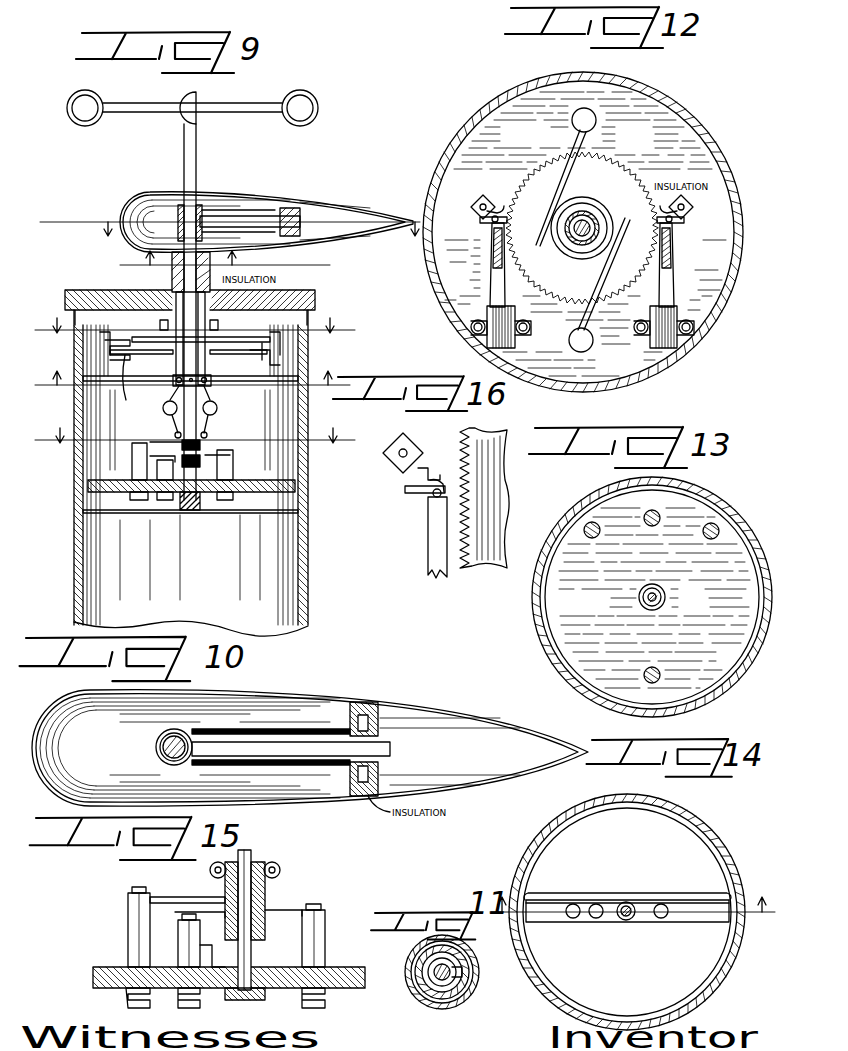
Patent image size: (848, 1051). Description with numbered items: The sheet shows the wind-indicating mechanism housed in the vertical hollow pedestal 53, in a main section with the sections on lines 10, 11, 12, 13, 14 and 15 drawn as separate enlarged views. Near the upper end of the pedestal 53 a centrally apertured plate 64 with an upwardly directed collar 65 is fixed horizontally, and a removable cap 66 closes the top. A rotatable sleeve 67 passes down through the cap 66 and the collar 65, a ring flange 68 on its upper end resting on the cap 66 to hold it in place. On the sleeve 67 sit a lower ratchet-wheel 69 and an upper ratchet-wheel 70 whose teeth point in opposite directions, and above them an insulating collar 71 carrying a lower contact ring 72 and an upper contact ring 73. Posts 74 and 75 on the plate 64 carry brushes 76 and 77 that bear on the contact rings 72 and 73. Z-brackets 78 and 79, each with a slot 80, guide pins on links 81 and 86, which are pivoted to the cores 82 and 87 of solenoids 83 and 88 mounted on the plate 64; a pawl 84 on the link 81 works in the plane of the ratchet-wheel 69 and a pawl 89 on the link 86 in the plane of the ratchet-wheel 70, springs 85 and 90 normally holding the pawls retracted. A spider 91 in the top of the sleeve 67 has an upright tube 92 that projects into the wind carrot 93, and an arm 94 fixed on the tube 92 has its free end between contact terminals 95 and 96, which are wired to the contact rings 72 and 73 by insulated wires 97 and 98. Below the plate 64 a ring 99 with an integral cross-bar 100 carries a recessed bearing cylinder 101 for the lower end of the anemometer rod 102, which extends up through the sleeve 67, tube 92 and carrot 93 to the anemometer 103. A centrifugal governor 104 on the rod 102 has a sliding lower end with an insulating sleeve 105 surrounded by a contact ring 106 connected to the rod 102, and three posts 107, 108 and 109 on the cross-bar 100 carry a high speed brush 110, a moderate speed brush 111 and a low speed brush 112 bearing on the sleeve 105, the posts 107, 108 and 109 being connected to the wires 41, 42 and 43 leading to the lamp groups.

In FIG. 9, the section line 10— 10 is at (236, 214).
In FIG. 9, the section line 11— 11 is at (223, 264).
In FIG. 9, the section line 12— 12 is at (203, 319).
In FIG. 9, the section line 13— 13 is at (188, 392).
In FIG. 9, the section line 14— 14 is at (199, 430).
In FIG. 14, the section line 15— 15 is at (629, 920).
In FIG. 15, the wire 41 is at (124, 992).
In FIG. 15, the wire 42 is at (328, 992).
In FIG. 15, the wire 43 is at (205, 992).
In FIG. 9, the pedestal 53 is at (308, 625).
In FIG. 12, the pedestal 53 is at (700, 130).
In FIG. 13, the pedestal 53 is at (742, 512).
In FIG. 14, the pedestal 53 is at (728, 848).
In FIG. 9, the plate 64 is at (90, 378).
In FIG. 12, the plate 64 is at (585, 234).
In FIG. 13, the plate 64 is at (653, 598).
In FIG. 9, the collar 65 is at (238, 364).
In FIG. 9, the cap 66 is at (78, 295).
In FIG. 9, the rotatable sleeve 67 is at (178, 284).
In FIG. 12, the rotatable sleeve 67 is at (590, 212).
In FIG. 13, the rotatable sleeve 67 is at (666, 598).
In FIG. 11, the rotatable sleeve 67 is at (462, 988).
In FIG. 9, the ring flange 68 is at (172, 286).
In FIG. 9, the lower ratchet-wheel 69 is at (141, 364).
In FIG. 9, the upper ratchet-wheel 70 is at (240, 330).
In FIG. 12, the upper ratchet-wheel 70 is at (582, 228).
In FIG. 16, the upper ratchet-wheel 70 is at (485, 486).
In FIG. 9, the insulating collar 71 is at (225, 302).
In FIG. 12, the insulating collar 71 is at (585, 200).
In FIG. 9, the lower contact ring 72 is at (174, 333).
In FIG. 9, the upper contact ring 73 is at (215, 312).
In FIG. 12, the upper contact ring 73 is at (560, 240).
In FIG. 12, the post 74 is at (592, 346).
In FIG. 13, the post 74 is at (660, 516).
In FIG. 12, the post 75 is at (576, 125).
In FIG. 13, the post 75 is at (660, 672).
In FIG. 9, the brush 76 is at (218, 333).
In FIG. 12, the brush 76 is at (608, 274).
In FIG. 9, the brush 77 is at (160, 323).
In FIG. 12, the brush 77 is at (566, 184).
In FIG. 9, the Z-bracket 78 is at (296, 372).
In FIG. 12, the Z-bracket 78 is at (690, 210).
In FIG. 9, the Z-bracket 79 is at (128, 380).
In FIG. 12, the Z-bracket 79 is at (478, 200).
In FIG. 16, the Z-bracket 79 is at (396, 448).
In FIG. 16, the slot 80 is at (424, 470).
In FIG. 12, the link 81 is at (673, 250).
In FIG. 12, the solenoid core 82 is at (672, 276).
In FIG. 12, the solenoid 83 is at (680, 350).
In FIG. 13, the solenoid 83 is at (720, 528).
In FIG. 9, the pawl 84 is at (267, 346).
In FIG. 12, the pawl 84 is at (686, 228).
In FIG. 12, the spring 85 is at (686, 216).
In FIG. 12, the link 86 is at (493, 250).
In FIG. 16, the link 86 is at (430, 544).
In FIG. 12, the solenoid core 87 is at (494, 276).
In FIG. 12, the solenoid 88 is at (512, 346).
In FIG. 13, the solenoid 88 is at (584, 532).
In FIG. 9, the pawl 89 is at (110, 342).
In FIG. 12, the pawl 89 is at (496, 212).
In FIG. 16, the pawl 89 is at (435, 497).
In FIG. 12, the spring 90 is at (480, 219).
In FIG. 16, the spring 90 is at (410, 489).
In FIG. 11, the spider 91 is at (460, 975).
In FIG. 9, the tube 92 is at (205, 203).
In FIG. 10, the tube 92 is at (160, 758).
In FIG. 11, the tube 92 is at (425, 986).
In FIG. 9, the wind carrot 93 is at (150, 192).
In FIG. 10, the wind carrot 93 is at (450, 735).
In FIG. 11, the wind carrot 93 is at (418, 953).
In FIG. 9, the arm 94 is at (265, 215).
In FIG. 10, the arm 94 is at (290, 748).
In FIG. 10, the contact terminal 95 is at (380, 736).
In FIG. 10, the contact terminal 96 is at (380, 764).
In FIG. 10, the insulated wire 97 is at (255, 730).
In FIG. 10, the insulated wire 98 is at (322, 768).
In FIG. 9, the ring 99 is at (288, 516).
In FIG. 14, the ring 99 is at (700, 832).
In FIG. 9, the cross-bar 100 is at (272, 488).
In FIG. 15, the cross-bar 100 is at (95, 970).
In FIG. 14, the cross-bar 100 is at (540, 906).
In FIG. 9, the bearing cylinder 101 is at (190, 502).
In FIG. 15, the bearing cylinder 101 is at (255, 1000).
In FIG. 9, the anemometer rod 102 is at (197, 150).
In FIG. 12, the anemometer rod 102 is at (590, 226).
In FIG. 13, the anemometer rod 102 is at (647, 598).
In FIG. 10, the anemometer rod 102 is at (162, 745).
In FIG. 15, the anemometer rod 102 is at (252, 852).
In FIG. 11, the anemometer rod 102 is at (442, 982).
In FIG. 14, the anemometer rod 102 is at (634, 908).
In FIG. 9, the anemometer 103 is at (250, 108).
In FIG. 9, the centrifugal governor 104 is at (215, 407).
In FIG. 15, the centrifugal governor 104 is at (282, 870).
In FIG. 14, the centrifugal governor 104 is at (618, 920).
In FIG. 9, the insulating sleeve 105 is at (202, 444).
In FIG. 15, the insulating sleeve 105 is at (266, 895).
In FIG. 14, the insulating sleeve 105 is at (660, 905).
In FIG. 9, the contact ring 106 is at (140, 452).
In FIG. 15, the contact ring 106 is at (225, 905).
In FIG. 9, the post 107 is at (158, 470).
In FIG. 15, the post 107 is at (128, 916).
In FIG. 14, the post 107 is at (570, 918).
In FIG. 9, the post 108 is at (228, 470).
In FIG. 15, the post 108 is at (325, 935).
In FIG. 14, the post 108 is at (665, 916).
In FIG. 9, the post 109 is at (170, 468).
In FIG. 15, the post 109 is at (178, 945).
In FIG. 14, the post 109 is at (595, 918).
In FIG. 9, the high speed brush 110 is at (168, 442).
In FIG. 15, the high speed brush 110 is at (165, 897).
In FIG. 14, the high speed brush 110 is at (588, 906).
In FIG. 9, the moderate speed brush 111 is at (237, 451).
In FIG. 15, the moderate speed brush 111 is at (288, 912).
In FIG. 14, the moderate speed brush 111 is at (642, 920).
In FIG. 9, the low speed brush 112 is at (182, 480).
In FIG. 15, the low speed brush 112 is at (215, 922).
In FIG. 14, the low speed brush 112 is at (616, 906).